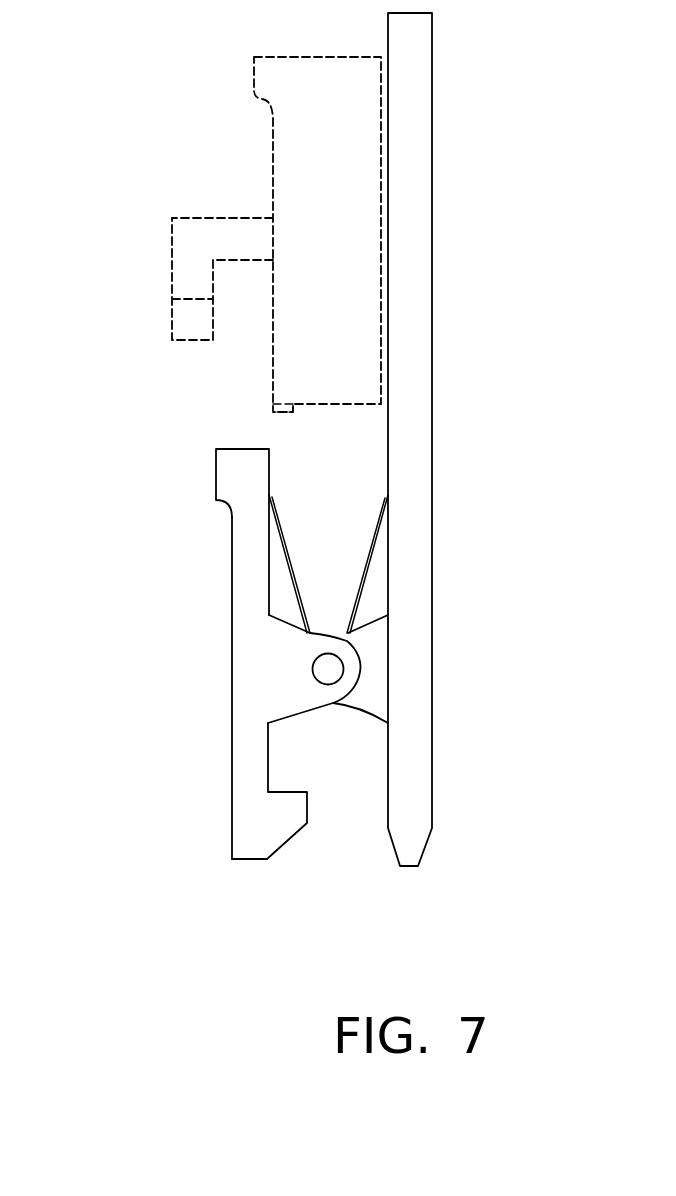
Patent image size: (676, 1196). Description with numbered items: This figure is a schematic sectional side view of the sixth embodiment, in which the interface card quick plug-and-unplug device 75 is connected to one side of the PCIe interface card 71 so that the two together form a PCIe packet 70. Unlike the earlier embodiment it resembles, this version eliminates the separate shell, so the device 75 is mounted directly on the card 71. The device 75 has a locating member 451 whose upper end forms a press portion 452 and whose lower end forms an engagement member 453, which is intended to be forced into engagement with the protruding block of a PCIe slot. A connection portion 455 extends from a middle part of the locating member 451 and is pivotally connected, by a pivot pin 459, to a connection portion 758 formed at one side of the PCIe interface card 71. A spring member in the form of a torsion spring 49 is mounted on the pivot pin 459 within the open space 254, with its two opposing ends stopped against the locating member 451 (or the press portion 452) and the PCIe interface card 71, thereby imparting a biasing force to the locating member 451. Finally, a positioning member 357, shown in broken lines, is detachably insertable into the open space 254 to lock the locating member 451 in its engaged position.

The PCIe packet 70 is at (167, 57).
The PCIe interface card 71 is at (427, 282).
The positioning member 357 is at (285, 170).
The open space 254 is at (297, 452).
The interface card quick plug-and-unplug device 75 is at (132, 538).
The press portion 452 is at (227, 480).
The locating member 451 is at (241, 583).
The engagement member 453 is at (255, 822).
The torsion spring 49 is at (280, 552).
The connection portion 455 is at (285, 678).
The connection portion 758 is at (375, 660).
The pivot pin 459 is at (323, 662).